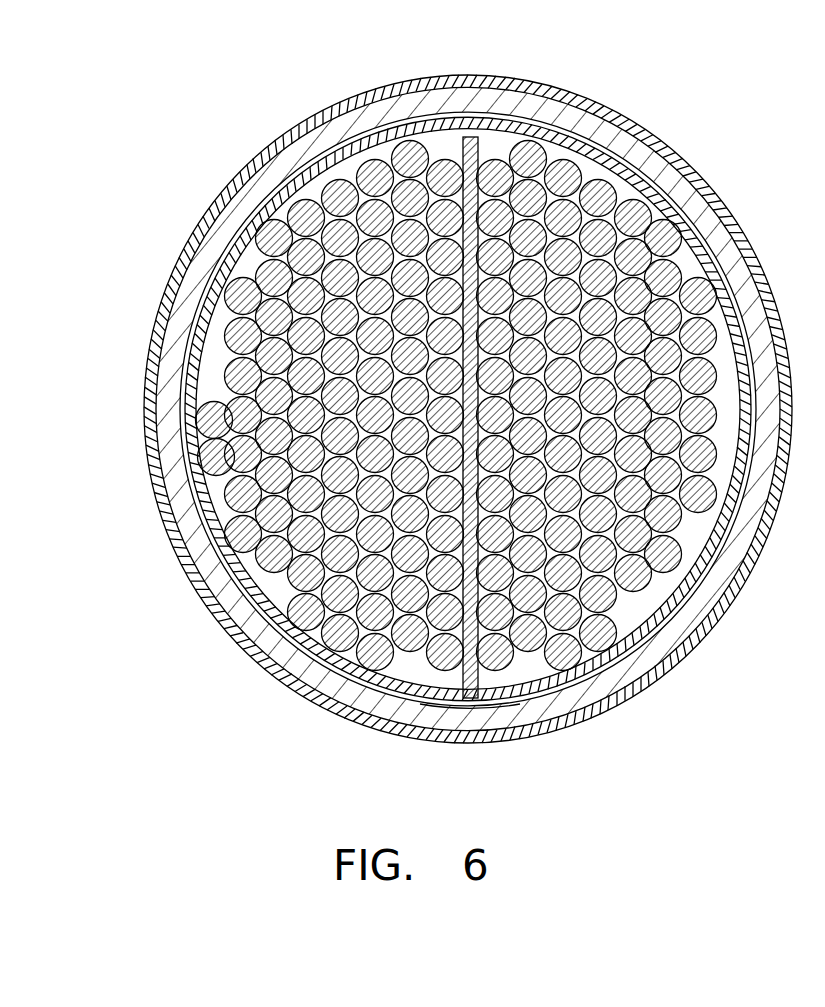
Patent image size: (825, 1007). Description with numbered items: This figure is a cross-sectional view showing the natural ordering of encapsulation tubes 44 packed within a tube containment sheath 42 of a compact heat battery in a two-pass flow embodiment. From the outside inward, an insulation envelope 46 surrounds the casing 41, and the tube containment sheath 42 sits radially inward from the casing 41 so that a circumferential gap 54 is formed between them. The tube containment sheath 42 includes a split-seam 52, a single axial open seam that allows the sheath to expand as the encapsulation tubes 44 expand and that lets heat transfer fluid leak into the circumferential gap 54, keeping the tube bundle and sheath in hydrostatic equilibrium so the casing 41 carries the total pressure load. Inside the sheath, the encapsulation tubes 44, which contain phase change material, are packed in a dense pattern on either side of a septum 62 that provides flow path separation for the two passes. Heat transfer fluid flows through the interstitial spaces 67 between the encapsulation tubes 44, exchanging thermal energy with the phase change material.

The casing 41 is at (703, 183).
The tube containment sheath 42 is at (196, 292).
The encapsulation tubes 44 is at (194, 424).
The insulation envelope 46 is at (541, 73).
The split-seam 52 is at (485, 708).
The circumferential gap 54 is at (570, 116).
The septum 62 is at (466, 136).
The interstitial spaces 67 is at (234, 473).